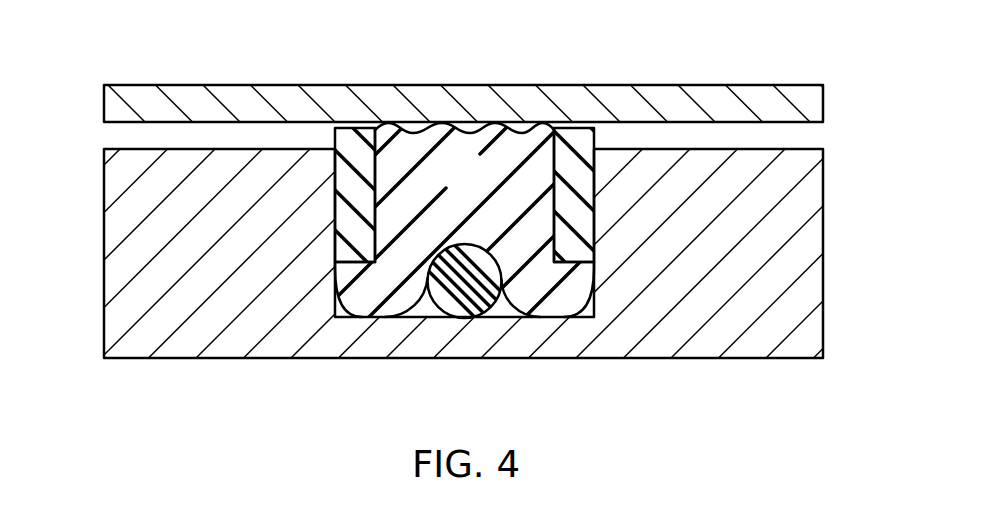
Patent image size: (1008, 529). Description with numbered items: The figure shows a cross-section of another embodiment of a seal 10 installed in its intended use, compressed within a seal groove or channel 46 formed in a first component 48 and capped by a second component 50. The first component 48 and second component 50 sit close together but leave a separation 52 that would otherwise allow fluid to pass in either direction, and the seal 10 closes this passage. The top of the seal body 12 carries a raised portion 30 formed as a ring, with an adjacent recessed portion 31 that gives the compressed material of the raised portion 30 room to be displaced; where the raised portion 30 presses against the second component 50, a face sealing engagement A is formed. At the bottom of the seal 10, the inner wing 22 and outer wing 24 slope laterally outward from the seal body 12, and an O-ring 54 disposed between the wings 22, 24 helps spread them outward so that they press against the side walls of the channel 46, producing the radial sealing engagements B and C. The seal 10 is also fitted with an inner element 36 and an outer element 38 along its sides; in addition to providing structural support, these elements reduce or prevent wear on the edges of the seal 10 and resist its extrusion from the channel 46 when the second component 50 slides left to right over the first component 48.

The seal 10 is at (657, 55).
The seal body 12 is at (475, 202).
The inner wing 22 is at (340, 274).
The outer wing 24 is at (583, 270).
The raised portion 30 is at (433, 126).
The recessed portion 31 is at (412, 128).
The inner element 36 is at (343, 173).
The outer element 38 is at (583, 183).
The seal groove or channel 46 is at (415, 307).
The first component 48 is at (116, 323).
The second component 50 is at (110, 106).
The separation 52 is at (812, 138).
The O-ring 54 is at (497, 300).
The face sealing engagement A is at (488, 128).
The radial sealing engagement B is at (352, 288).
The radial sealing engagement C is at (560, 300).